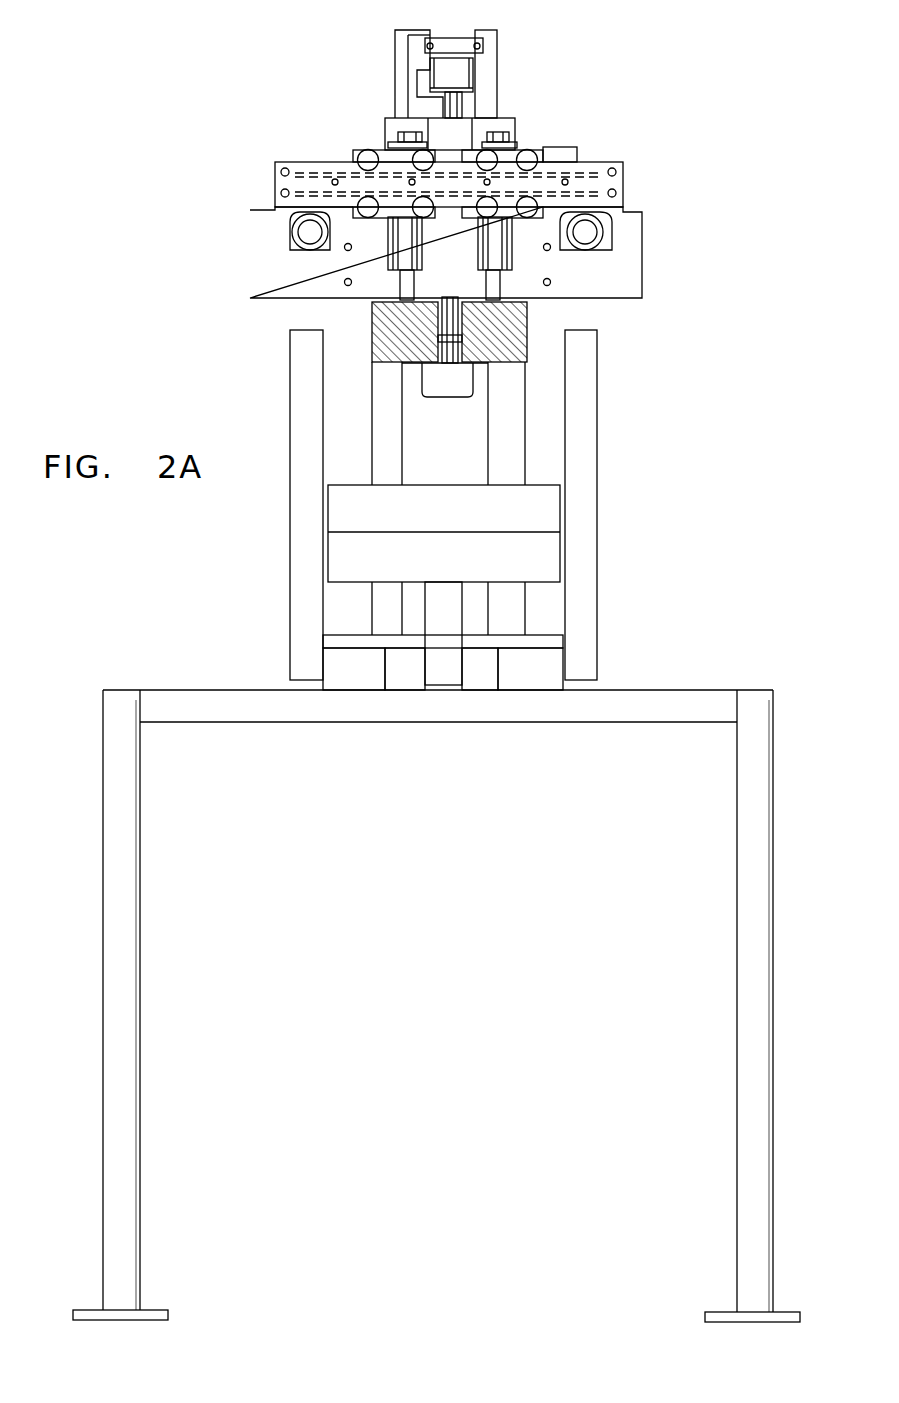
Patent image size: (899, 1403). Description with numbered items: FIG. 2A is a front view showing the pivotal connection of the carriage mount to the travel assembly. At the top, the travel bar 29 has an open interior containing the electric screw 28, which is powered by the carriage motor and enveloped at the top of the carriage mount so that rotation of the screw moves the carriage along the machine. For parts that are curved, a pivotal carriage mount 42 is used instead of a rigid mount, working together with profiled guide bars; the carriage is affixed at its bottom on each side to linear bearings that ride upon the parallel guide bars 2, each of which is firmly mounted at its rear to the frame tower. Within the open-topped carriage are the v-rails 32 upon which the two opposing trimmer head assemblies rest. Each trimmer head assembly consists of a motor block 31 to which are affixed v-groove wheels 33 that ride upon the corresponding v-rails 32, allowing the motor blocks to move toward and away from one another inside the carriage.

The guide bar 2 is at (292, 238).
The electric screw 28 is at (472, 80).
The travel bar 29 is at (397, 55).
The motor block 31 is at (518, 150).
The v-rails 32 is at (597, 163).
The v-groove wheels 33 is at (370, 153).
The pivotal carriage mount 42 is at (440, 107).